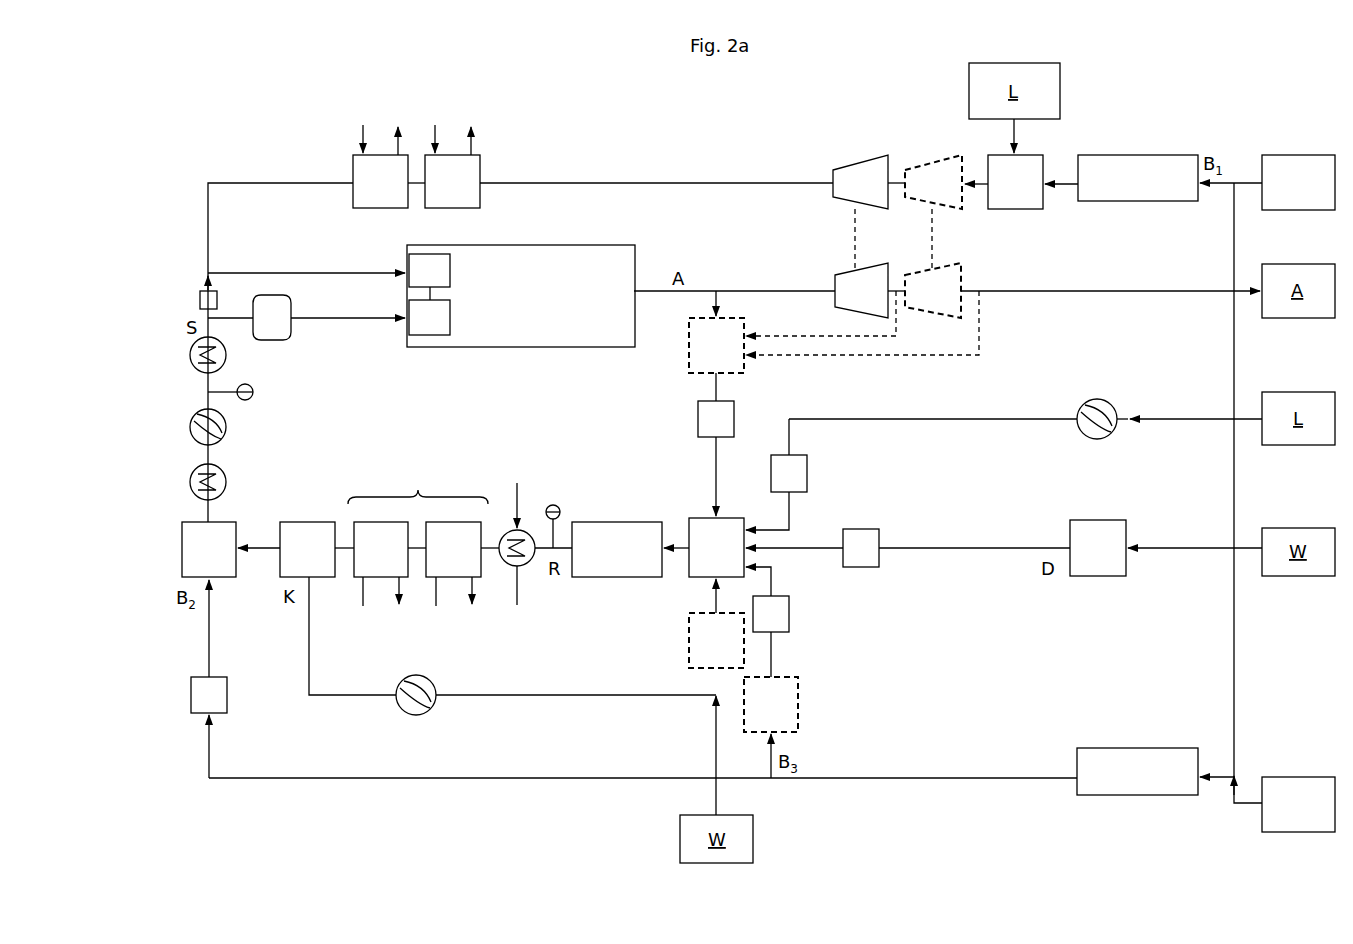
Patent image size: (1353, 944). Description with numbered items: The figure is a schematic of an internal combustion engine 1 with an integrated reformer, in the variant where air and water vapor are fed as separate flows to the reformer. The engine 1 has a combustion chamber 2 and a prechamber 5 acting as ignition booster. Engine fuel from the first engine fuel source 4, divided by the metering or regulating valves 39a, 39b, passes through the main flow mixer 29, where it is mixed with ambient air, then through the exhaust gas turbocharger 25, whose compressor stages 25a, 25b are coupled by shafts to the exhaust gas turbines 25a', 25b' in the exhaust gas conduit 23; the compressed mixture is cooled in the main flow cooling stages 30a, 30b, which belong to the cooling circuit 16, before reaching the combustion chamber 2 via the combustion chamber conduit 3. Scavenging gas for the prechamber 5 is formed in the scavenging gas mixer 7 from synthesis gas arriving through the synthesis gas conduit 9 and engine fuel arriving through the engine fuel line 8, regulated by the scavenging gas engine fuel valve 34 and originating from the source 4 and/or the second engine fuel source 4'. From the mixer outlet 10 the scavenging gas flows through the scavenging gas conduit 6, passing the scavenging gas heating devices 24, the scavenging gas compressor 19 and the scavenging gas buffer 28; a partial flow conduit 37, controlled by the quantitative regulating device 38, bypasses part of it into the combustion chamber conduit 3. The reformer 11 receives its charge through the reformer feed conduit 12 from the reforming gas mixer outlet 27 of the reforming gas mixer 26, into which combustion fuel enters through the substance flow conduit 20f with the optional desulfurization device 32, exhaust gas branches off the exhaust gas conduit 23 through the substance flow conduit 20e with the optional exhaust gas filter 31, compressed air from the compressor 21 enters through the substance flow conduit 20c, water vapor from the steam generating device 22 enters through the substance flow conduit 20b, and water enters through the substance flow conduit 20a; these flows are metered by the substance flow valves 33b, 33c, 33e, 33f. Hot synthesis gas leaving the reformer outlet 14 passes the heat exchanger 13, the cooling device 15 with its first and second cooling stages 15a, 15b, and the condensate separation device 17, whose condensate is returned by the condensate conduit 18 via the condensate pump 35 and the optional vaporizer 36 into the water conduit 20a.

The internal combustion engine 1 is at (521, 296).
The combustion chamber 2 is at (429, 277).
The combustion chamber conduit 3 is at (306, 260).
The first engine fuel source 4 is at (1298, 182).
The second engine fuel source 4' is at (1298, 804).
The prechamber 5 is at (429, 317).
The scavenging gas conduit 6 is at (306, 331).
The scavenging gas mixer 7 is at (209, 549).
The engine fuel line 8 is at (217, 628).
The synthesis gas conduit 9 is at (259, 563).
The mixer outlet 10 is at (205, 521).
The reformer 11 is at (617, 549).
The reformer feed conduit 12 is at (671, 545).
The heat exchanger 13 is at (510, 540).
The reformer outlet 14 is at (571, 540).
The cooling device 15 is at (418, 484).
The first cooling stage 15a is at (462, 564).
The second cooling stage 15b is at (380, 564).
The cooling circuit 16 is at (428, 107).
The condensate separation device 17 is at (307, 549).
The condensate conduit 18 is at (512, 650).
The scavenging gas compressor 19 is at (200, 425).
The substance flow conduit 20a is at (716, 685).
The substance flow conduit 20b is at (908, 536).
The substance flow conduit 20c is at (1025, 407).
The substance flow conduit 20e is at (738, 476).
The substance flow conduit 20f is at (776, 581).
The compressor 21 is at (1106, 414).
The steam generating device 22 is at (1166, 548).
The exhaust gas conduit 23 is at (947, 279).
The scavenging gas heating devices 24 is at (214, 359).
The exhaust gas turbocharger 25 is at (838, 236).
The compressor stage 25a is at (869, 182).
The compressor stage 25b is at (933, 182).
The exhaust gas turbine 25a' is at (861, 290).
The exhaust gas turbine 25b' is at (933, 290).
The reforming gas mixer 26 is at (716, 547).
The reforming gas mixer outlet 27 is at (688, 540).
The scavenging gas buffer 28 is at (272, 317).
The main flow mixer 29 is at (1004, 182).
The main flow cooling stage 30a is at (620, 166).
The main flow cooling stage 30b is at (380, 166).
The exhaust gas filter 31 is at (716, 359).
The desulfurization device 32 is at (771, 727).
The substance flow valve 33b is at (872, 544).
The substance flow valve 33c is at (800, 476).
The substance flow valve 33e is at (728, 424).
The substance flow valve 33f is at (780, 620).
The scavenging gas engine fuel valve 34 is at (213, 701).
The condensate pump 35 is at (411, 703).
The vaporizer 36 is at (716, 623).
The partial flow conduit 37 is at (204, 284).
The quantitative regulating device 38 is at (200, 301).
The metering or regulating valve 39a is at (1153, 178).
The metering or regulating valve 39b is at (1155, 771).